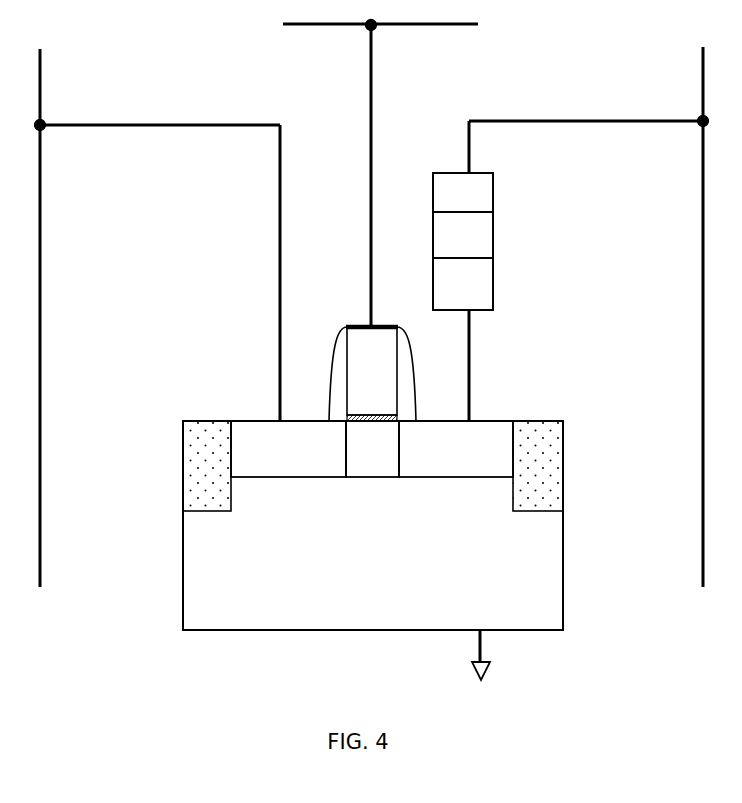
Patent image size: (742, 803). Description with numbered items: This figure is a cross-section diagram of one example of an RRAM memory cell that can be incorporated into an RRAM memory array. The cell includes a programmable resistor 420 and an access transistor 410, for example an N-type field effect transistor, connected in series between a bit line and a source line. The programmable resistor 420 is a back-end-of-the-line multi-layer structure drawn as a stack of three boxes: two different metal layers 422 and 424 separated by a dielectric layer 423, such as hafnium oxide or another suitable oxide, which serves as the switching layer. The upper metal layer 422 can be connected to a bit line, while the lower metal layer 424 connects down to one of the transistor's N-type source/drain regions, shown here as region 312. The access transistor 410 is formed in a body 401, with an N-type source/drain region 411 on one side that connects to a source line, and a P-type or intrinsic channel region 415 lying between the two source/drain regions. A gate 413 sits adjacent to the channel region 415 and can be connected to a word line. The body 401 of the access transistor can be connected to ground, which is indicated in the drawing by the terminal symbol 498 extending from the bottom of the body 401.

The body 401 is at (504, 600).
The N-type source/drain region 411 is at (270, 464).
The channel region 415 is at (355, 464).
The drain region 312 is at (449, 462).
The access transistor 410 is at (359, 333).
The gate 413 is at (354, 394).
The programmable resistor 420 is at (502, 238).
The metal layer 422 is at (443, 205).
The dielectric layer 423 is at (447, 250).
The metal layer 424 is at (444, 298).
The body terminal 498 is at (481, 680).